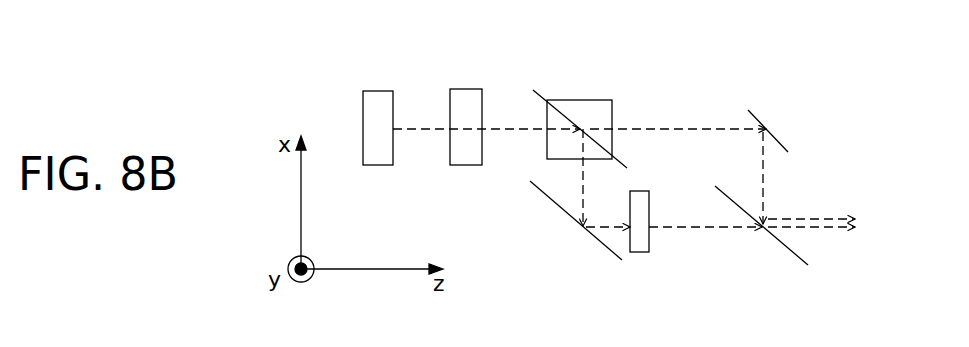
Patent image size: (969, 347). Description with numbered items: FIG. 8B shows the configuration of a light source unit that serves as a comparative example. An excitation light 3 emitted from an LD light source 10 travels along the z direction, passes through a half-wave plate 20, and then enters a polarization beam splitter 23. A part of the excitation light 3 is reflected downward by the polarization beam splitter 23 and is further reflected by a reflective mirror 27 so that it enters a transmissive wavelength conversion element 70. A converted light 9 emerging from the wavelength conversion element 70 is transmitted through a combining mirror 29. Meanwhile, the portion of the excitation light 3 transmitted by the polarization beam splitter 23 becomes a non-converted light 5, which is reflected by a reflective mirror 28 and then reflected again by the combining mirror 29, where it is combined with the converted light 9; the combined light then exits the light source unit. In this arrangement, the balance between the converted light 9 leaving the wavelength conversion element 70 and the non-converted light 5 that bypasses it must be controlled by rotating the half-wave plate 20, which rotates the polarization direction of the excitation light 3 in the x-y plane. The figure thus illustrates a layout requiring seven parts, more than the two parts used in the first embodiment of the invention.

The LD light source 10 is at (380, 91).
The excitation light 3 is at (420, 128).
The half-wave plate 20 is at (473, 88).
The polarization beam splitter 23 is at (593, 100).
The reflective mirror 27 is at (572, 218).
The reflective mirror 28 is at (779, 135).
The combining mirror 29 is at (797, 256).
The transmissive wavelength conversion element 70 is at (643, 252).
The non-converted light 5 is at (832, 218).
The converted light 9 is at (830, 230).